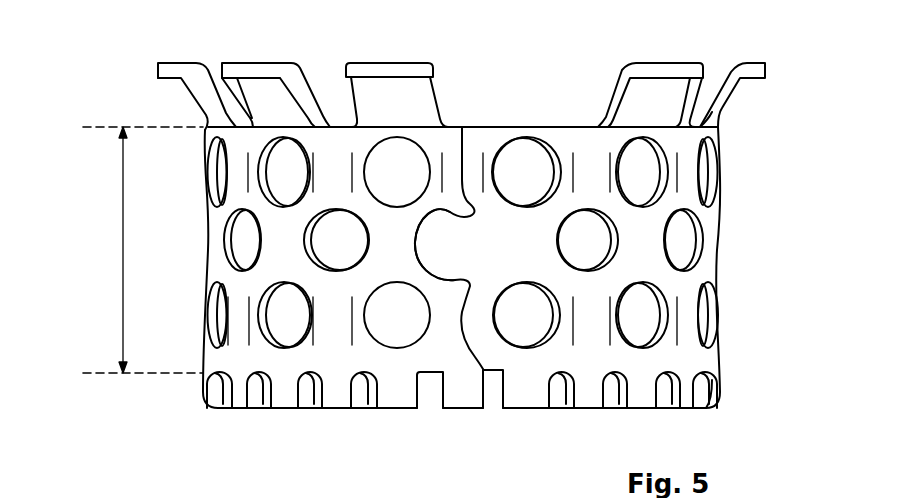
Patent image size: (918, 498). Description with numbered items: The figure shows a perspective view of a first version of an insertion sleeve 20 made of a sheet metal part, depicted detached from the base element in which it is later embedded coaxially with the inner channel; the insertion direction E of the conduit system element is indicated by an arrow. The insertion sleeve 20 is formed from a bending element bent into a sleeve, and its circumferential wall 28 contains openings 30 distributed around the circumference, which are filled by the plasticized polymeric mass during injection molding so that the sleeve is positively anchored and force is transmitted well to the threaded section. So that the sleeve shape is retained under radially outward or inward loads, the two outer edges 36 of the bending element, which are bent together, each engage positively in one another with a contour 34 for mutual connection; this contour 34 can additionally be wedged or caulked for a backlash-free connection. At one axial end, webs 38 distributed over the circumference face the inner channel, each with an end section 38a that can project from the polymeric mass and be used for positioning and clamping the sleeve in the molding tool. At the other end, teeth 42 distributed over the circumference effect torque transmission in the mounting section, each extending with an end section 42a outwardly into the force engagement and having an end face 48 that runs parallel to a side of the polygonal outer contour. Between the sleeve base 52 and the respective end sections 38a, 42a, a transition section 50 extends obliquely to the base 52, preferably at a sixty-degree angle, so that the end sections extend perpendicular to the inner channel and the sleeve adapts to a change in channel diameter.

The insertion sleeve 20 is at (113, 65).
The circumferential wall 28 is at (212, 270).
The openings 30 is at (678, 242).
The contour 34 is at (441, 253).
The outer edges 36 is at (483, 369).
The webs 38 is at (320, 408).
The end section 38a is at (553, 408).
The teeth 42 is at (318, 84).
The end section 42a is at (748, 64).
The end face 48 is at (553, 77).
The transition section 50 is at (727, 86).
The sleeve base 52 is at (143, 250).
The insertion direction E is at (462, 94).